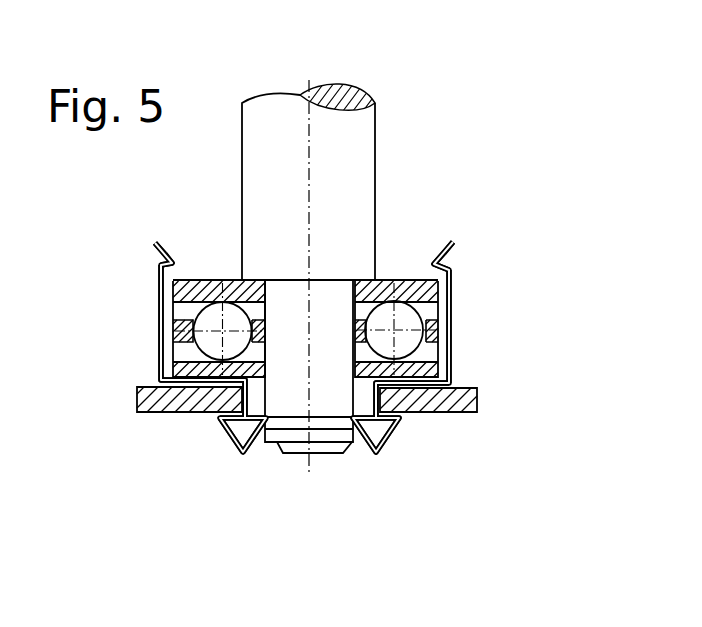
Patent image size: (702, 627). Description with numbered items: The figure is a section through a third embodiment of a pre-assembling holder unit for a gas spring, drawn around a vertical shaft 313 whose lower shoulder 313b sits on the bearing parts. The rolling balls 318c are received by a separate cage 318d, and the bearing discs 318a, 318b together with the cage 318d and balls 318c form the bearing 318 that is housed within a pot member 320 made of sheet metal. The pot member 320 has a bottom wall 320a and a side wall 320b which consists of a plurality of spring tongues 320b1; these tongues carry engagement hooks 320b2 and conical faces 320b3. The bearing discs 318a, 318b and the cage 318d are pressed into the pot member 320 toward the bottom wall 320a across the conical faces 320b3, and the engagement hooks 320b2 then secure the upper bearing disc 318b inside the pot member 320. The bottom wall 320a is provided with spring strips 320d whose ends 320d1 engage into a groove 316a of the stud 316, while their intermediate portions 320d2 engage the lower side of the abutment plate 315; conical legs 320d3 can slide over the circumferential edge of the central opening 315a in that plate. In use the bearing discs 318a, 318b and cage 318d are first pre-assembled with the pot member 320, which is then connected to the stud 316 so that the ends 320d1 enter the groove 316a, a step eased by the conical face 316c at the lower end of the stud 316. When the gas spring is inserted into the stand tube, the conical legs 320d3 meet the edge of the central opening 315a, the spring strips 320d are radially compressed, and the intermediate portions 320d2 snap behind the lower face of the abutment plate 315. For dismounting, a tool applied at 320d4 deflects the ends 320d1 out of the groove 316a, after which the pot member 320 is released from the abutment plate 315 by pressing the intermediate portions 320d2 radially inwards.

The shaft 313 is at (360, 138).
The shaft shoulder 313b is at (335, 280).
The abutment plate 315 is at (455, 400).
The central opening 315a is at (410, 417).
The stud 316 is at (287, 383).
The groove 316a is at (352, 448).
The conical face 316c is at (337, 453).
The bearing 318 is at (148, 343).
The lower bearing disc 318a is at (458, 366).
The upper bearing disc 318b is at (437, 285).
The balls 318c is at (208, 322).
The cage 318d is at (172, 330).
The pot member 320 is at (343, 392).
The bottom wall 320a is at (197, 382).
The side wall 320b is at (455, 300).
The spring tongues 320b1 is at (455, 318).
The engagement hooks 320b2 is at (450, 262).
The conical faces 320b3 is at (440, 233).
The spring strips 320d is at (225, 502).
The ends 320d1 is at (288, 455).
The intermediate portions 320d2 is at (223, 432).
The conical legs 320d3 is at (397, 440).
The tool engagement location 320d4 is at (260, 453).